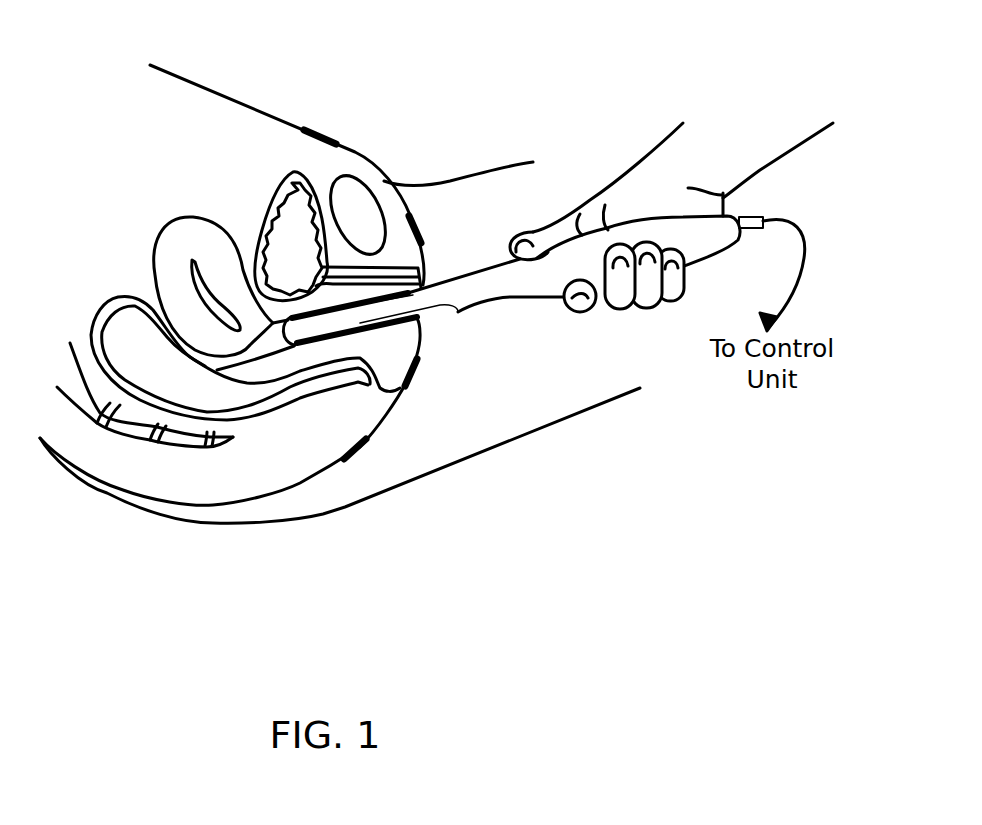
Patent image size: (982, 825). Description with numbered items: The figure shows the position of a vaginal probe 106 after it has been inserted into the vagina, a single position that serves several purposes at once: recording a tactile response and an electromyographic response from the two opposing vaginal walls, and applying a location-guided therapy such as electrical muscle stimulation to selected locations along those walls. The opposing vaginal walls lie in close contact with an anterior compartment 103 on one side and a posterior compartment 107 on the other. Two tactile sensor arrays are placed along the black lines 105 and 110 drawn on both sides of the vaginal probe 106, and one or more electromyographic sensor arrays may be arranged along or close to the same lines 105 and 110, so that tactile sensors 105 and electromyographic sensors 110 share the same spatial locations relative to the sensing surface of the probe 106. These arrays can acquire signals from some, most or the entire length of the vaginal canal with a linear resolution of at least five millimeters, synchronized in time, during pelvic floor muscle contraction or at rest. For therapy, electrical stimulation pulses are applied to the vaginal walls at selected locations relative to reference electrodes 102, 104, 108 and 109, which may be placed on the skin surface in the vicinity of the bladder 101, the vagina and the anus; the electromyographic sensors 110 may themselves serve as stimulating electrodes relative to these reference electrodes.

The bladder 101 is at (288, 218).
The reference electrode 102 is at (318, 123).
The anterior compartment 103 is at (353, 291).
The reference electrode 104 is at (412, 215).
The tactile sensor array line 105 is at (432, 287).
The vaginal probe 106 is at (458, 290).
The posterior compartment 107 is at (345, 345).
The reference electrode 108 is at (352, 458).
The reference electrode 109 is at (413, 374).
The electromyographic sensor array line 110 is at (447, 308).